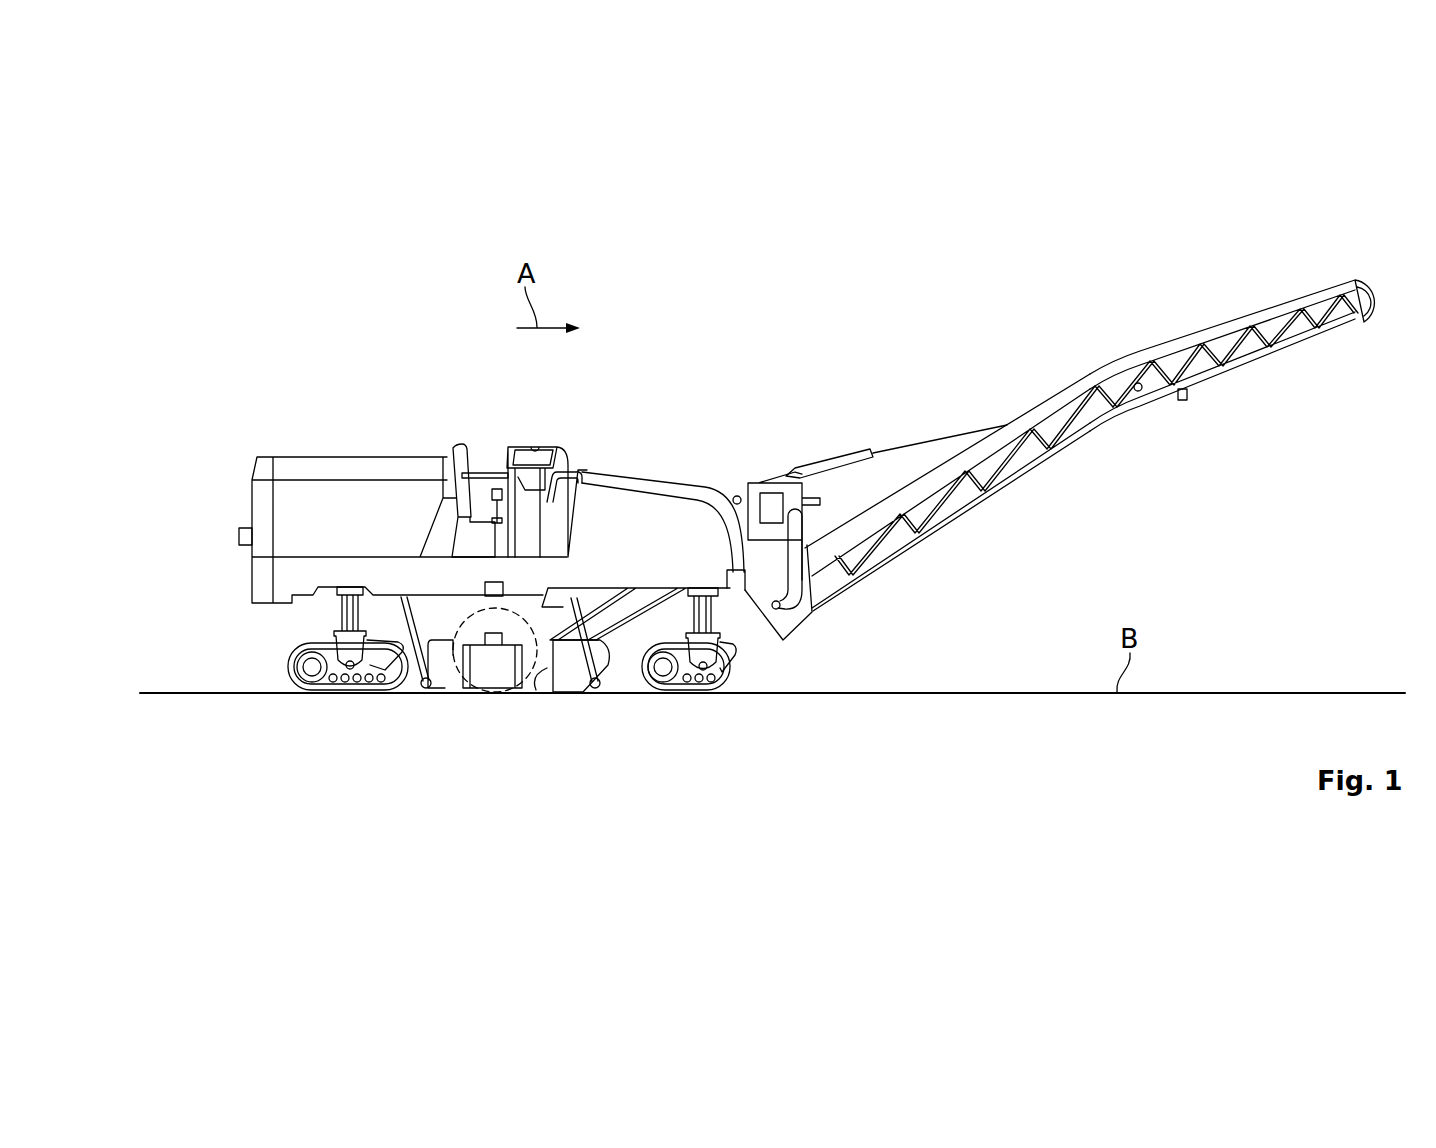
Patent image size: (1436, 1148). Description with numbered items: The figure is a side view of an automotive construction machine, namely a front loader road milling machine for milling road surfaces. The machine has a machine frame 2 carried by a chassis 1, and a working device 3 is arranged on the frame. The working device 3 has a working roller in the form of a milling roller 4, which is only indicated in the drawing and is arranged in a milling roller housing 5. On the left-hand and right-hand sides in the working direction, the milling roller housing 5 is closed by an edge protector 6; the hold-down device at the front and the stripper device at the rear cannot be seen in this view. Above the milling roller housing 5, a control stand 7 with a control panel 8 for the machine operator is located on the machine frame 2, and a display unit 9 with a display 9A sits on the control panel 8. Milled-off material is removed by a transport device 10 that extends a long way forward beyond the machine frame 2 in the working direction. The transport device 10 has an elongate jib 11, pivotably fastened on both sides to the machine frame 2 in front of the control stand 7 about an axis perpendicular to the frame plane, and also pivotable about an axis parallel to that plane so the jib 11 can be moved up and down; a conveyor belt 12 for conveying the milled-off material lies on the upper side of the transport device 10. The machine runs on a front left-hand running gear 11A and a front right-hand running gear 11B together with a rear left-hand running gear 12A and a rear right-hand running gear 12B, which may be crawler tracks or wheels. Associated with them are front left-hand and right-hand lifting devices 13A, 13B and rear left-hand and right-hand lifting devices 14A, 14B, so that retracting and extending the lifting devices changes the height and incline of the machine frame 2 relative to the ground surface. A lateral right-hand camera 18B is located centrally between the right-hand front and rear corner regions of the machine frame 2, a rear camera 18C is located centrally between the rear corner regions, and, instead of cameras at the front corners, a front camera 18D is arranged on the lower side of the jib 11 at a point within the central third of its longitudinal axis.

The chassis 1 is at (763, 524).
The machine frame 2 is at (363, 530).
The working device 3 is at (484, 684).
The milling roller 4 is at (489, 672).
The milling roller housing 5 is at (398, 620).
The edge protector 6 is at (567, 677).
The control stand 7 is at (514, 455).
The control panel 8 is at (568, 436).
The display unit 9 is at (542, 467).
The display 9A is at (537, 449).
The transport device 10 is at (1059, 454).
The jib 11 is at (1150, 408).
The conveyor belt 12 is at (1232, 349).
The front left-hand running gear 11A is at (768, 669).
The front right-hand running gear 11B is at (760, 667).
The rear left-hand running gear 12A is at (280, 669).
The rear right-hand running gear 12B is at (288, 670).
The front left-hand lifting device 13A is at (791, 630).
The front right-hand lifting device 13B is at (717, 614).
The rear left-hand lifting device 14A is at (277, 628).
The rear right-hand lifting device 14B is at (333, 613).
The lateral right-hand camera 18B is at (497, 588).
The rear camera 18C is at (238, 533).
The front camera 18D is at (1190, 393).